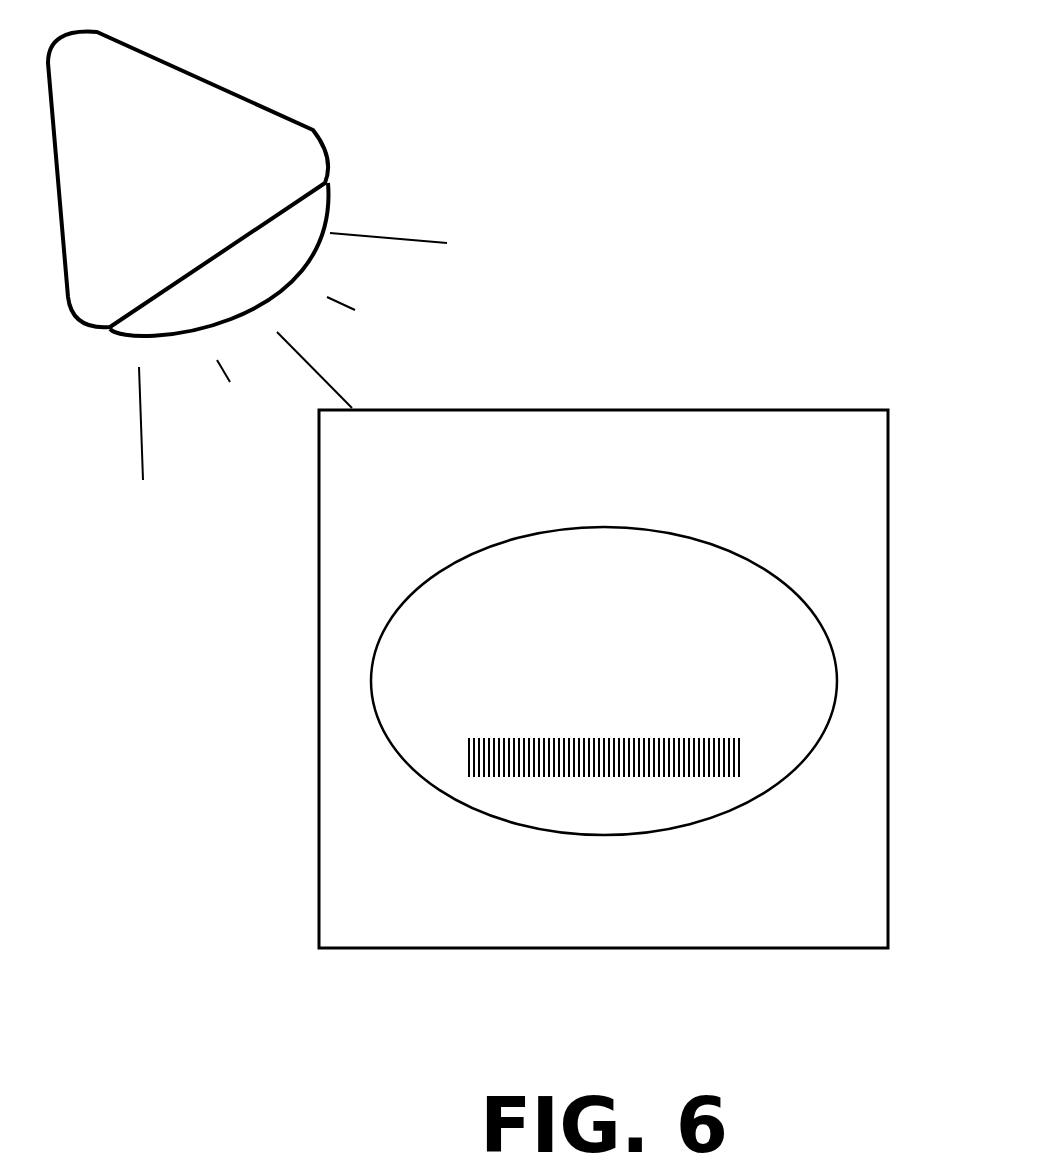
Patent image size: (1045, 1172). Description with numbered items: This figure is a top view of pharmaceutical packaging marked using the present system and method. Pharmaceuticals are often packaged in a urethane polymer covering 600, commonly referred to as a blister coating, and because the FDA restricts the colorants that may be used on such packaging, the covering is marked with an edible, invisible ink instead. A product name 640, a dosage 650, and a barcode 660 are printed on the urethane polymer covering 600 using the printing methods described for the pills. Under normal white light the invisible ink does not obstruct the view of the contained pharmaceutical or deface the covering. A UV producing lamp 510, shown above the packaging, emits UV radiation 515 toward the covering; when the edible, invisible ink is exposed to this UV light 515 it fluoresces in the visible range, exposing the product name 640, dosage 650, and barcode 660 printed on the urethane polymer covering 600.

The UV producing lamp 510 is at (432, 162).
The UV radiation 515 is at (490, 252).
The urethane polymer covering 600 is at (878, 370).
The product name 640 is at (528, 627).
The dosage 650 is at (517, 685).
The barcode 660 is at (468, 748).